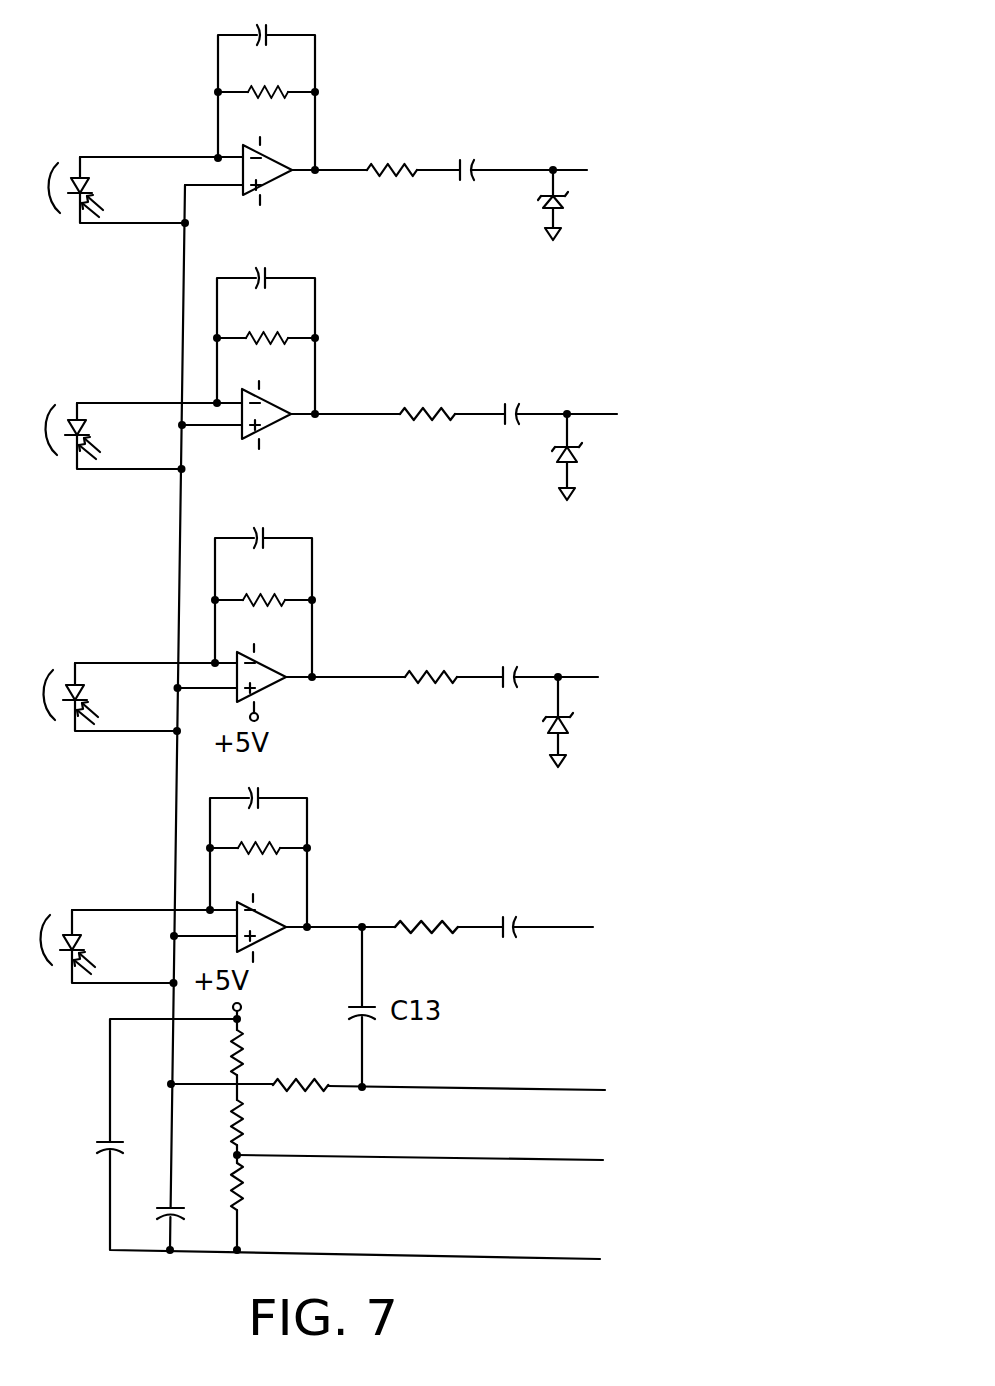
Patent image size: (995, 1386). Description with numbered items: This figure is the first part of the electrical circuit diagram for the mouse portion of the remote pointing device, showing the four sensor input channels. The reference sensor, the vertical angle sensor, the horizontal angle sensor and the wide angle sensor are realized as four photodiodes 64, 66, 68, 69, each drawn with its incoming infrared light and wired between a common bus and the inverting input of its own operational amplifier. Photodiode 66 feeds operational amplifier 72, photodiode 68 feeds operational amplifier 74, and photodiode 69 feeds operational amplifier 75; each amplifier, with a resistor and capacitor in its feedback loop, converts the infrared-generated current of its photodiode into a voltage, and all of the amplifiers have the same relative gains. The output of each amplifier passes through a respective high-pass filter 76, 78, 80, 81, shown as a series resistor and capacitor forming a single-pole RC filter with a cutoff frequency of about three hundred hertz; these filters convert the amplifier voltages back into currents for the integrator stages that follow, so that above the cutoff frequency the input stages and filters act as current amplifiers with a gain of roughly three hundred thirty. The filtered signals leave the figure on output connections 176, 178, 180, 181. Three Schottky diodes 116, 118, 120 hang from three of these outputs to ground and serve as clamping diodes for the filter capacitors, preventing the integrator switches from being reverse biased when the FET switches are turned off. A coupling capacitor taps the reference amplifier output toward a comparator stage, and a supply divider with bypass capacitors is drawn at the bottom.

The photodiode 64 is at (62, 935).
The photodiode 66 is at (63, 685).
The photodiode 68 is at (67, 420).
The photodiode 69 is at (70, 172).
The operational amplifier 72 is at (268, 692).
The operational amplifier 74 is at (270, 428).
The operational amplifier 75 is at (270, 188).
The high-pass filter 76 is at (445, 925).
The high-pass filter 78 is at (455, 676).
The high-pass filter 80 is at (455, 412).
The high-pass filter 81 is at (400, 167).
The Schottky diode 116 is at (568, 727).
The Schottky diode 118 is at (578, 455).
The Schottky diode 120 is at (563, 205).
The output line 176 is at (558, 928).
The output line 178 is at (537, 678).
The output line 180 is at (530, 416).
The output line 181 is at (512, 172).